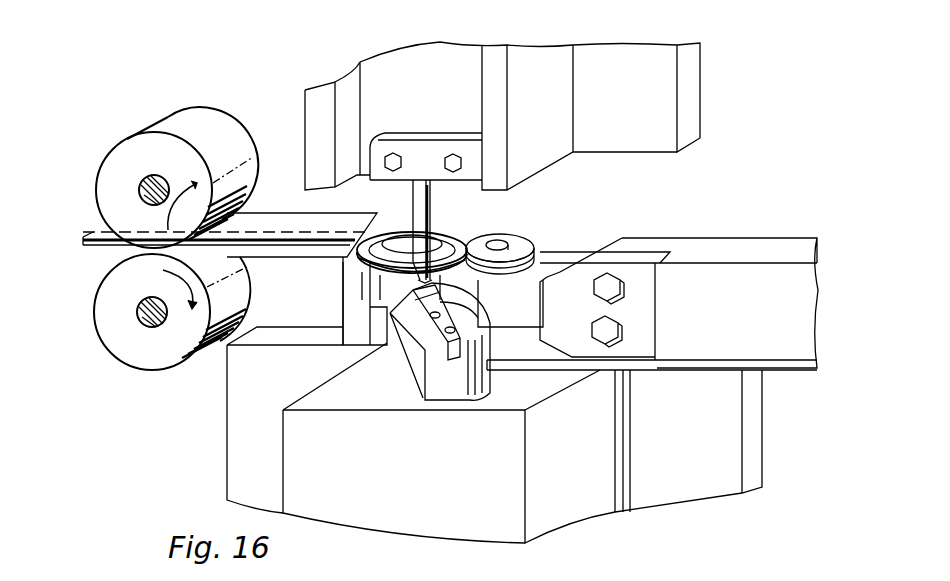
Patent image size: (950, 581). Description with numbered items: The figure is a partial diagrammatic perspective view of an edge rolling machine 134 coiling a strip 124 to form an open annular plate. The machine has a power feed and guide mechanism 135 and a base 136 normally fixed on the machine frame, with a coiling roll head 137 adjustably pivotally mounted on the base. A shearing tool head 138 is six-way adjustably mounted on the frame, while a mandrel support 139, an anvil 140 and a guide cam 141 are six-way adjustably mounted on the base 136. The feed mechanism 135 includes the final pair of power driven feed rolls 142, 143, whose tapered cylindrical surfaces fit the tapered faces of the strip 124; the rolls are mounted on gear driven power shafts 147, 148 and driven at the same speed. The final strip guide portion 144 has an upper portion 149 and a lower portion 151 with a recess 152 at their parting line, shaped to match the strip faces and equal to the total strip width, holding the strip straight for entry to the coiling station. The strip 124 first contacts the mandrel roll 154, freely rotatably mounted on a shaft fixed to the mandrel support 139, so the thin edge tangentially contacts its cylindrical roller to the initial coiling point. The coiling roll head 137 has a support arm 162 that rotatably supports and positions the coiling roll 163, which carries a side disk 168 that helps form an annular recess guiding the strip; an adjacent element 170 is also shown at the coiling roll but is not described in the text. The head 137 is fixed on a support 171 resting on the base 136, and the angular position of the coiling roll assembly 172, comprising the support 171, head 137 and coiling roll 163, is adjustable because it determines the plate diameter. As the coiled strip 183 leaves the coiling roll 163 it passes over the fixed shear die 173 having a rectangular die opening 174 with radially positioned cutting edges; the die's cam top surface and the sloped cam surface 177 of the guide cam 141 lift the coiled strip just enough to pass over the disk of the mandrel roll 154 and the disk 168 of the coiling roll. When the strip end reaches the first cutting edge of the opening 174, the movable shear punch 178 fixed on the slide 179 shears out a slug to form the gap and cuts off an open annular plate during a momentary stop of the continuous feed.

The edge rolling machine 134 is at (662, 197).
The power feed and guide mechanism 135 is at (165, 105).
The base 136 is at (250, 418).
The coiling roll head 137 is at (730, 243).
The shearing tool head 138 is at (540, 60).
The mandrel support 139 is at (395, 315).
The anvil 140 is at (462, 395).
The guide cam 141 is at (357, 330).
The feed roll 142 is at (130, 152).
The feed roll 143 is at (137, 350).
The strip guide portion 144 is at (293, 208).
The gear driven power shaft 147 is at (140, 190).
The gear driven power shaft 148 is at (138, 312).
The upper portion of strip guide 149 is at (240, 230).
The lower portion of strip guide 151 is at (272, 253).
The recess 152 is at (363, 236).
The mandrel roll 154 is at (400, 245).
The single width strip 124 is at (380, 245).
The support arm 162 is at (557, 265).
The coiling roll 163 is at (540, 240).
The side disk 168 is at (525, 232).
The roller flange 170 is at (450, 232).
The support 171 is at (660, 365).
The coiling roll assembly 172 is at (663, 233).
The shear tool or die 173 is at (462, 298).
The rectangular die opening 174 is at (418, 340).
The sloped cam surface 177 is at (377, 257).
The movable shear punch 178 is at (492, 232).
The slide 179 is at (458, 113).
The coiled strip 183 is at (365, 272).